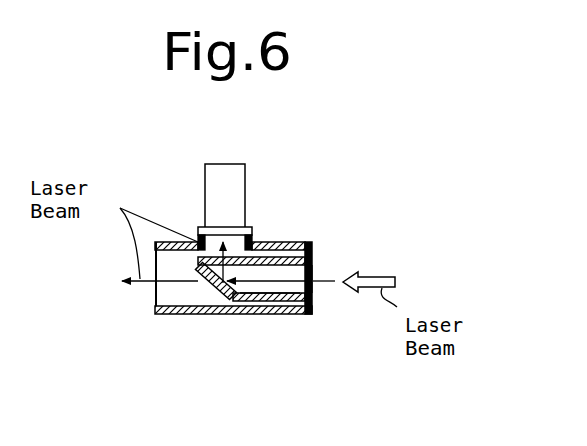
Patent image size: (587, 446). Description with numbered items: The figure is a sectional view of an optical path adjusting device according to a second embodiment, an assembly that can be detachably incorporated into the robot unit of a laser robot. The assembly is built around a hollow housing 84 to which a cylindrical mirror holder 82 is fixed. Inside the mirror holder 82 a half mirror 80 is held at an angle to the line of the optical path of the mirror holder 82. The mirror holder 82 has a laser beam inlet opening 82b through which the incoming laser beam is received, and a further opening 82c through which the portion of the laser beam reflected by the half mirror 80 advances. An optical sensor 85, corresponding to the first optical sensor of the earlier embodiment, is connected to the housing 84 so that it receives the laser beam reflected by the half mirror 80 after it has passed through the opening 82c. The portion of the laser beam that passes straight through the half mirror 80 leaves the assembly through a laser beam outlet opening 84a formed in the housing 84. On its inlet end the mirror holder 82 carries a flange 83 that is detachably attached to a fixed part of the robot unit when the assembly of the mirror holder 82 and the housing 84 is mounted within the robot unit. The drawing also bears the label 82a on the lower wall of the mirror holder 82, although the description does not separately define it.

The half mirror 80 is at (218, 294).
The cylindrical mirror holder 82 is at (277, 256).
The lower wall of inner tube 82a is at (281, 295).
The laser beam inlet opening 82b is at (312, 275).
The opening 82c is at (236, 252).
The flange 83 is at (312, 247).
The hollow housing 84 is at (168, 315).
The laser beam outlet opening 84a is at (158, 295).
The optical sensor 85 is at (210, 183).